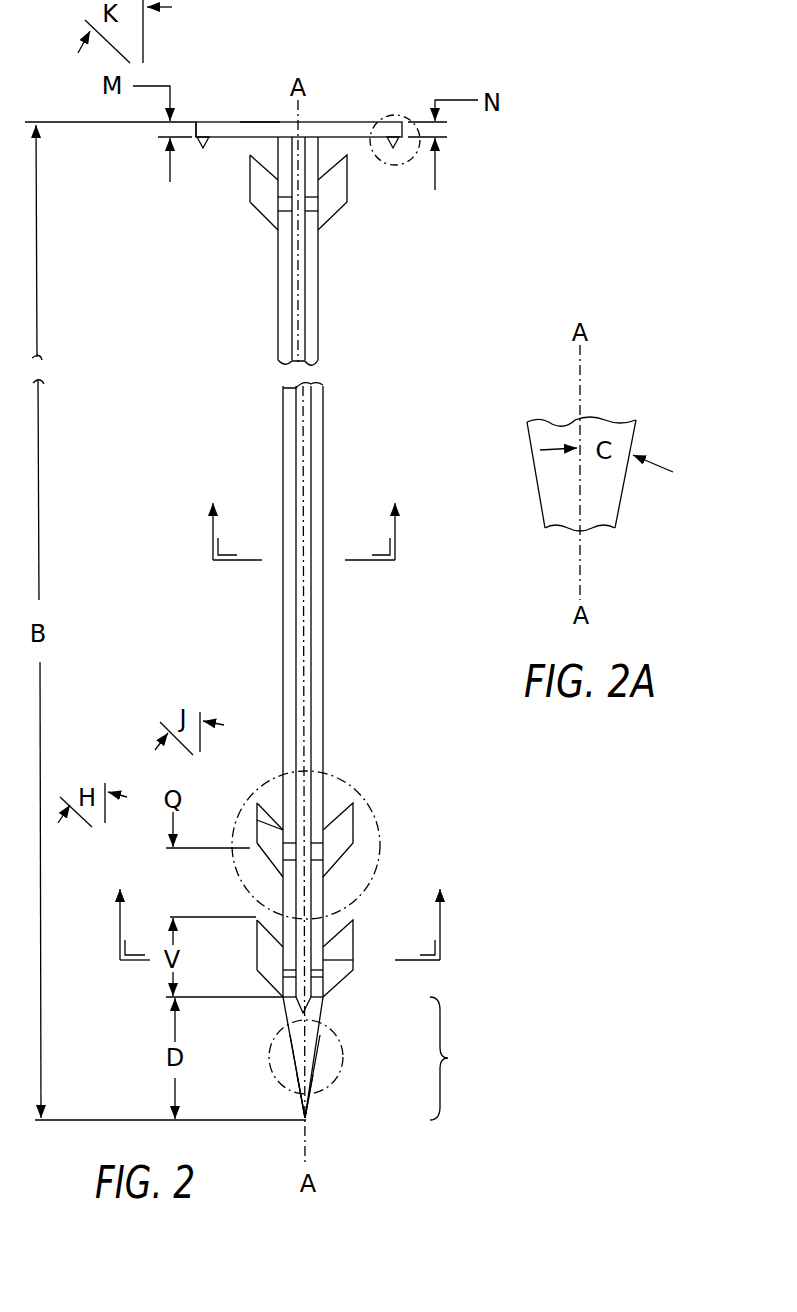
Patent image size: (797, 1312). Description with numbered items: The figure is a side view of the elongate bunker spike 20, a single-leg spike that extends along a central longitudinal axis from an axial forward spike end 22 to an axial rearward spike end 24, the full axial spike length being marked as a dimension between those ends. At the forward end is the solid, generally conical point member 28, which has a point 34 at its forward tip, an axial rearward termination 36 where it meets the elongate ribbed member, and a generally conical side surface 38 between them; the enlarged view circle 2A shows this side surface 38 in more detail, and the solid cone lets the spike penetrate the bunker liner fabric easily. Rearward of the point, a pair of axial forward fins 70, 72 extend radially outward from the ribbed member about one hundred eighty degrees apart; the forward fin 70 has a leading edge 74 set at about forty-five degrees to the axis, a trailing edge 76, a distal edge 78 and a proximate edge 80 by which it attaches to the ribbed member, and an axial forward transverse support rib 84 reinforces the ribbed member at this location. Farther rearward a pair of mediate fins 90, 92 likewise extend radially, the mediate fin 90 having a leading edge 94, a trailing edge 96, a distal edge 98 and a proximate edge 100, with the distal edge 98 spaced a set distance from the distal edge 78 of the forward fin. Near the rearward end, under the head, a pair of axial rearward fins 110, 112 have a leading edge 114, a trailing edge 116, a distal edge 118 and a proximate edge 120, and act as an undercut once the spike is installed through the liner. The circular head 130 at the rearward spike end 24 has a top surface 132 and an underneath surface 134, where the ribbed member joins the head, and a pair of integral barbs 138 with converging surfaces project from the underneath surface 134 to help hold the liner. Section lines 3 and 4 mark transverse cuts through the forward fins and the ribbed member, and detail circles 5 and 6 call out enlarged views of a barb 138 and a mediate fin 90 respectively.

In FIG. 2, the elongate bunker spike 20 is at (244, 670).
In FIG. 2, the axial forward spike end 22 is at (318, 1124).
In FIG. 2, the axial rearward spike end 24 is at (322, 117).
In FIG. 2, the conical point member 28 is at (455, 1058).
In FIG. 2, the point 34 is at (304, 1121).
In FIG. 2, the axial rearward termination 36 is at (320, 988).
In FIG. 2A, the conical side surface 38 is at (540, 497).
In FIG. 2, the axial forward fin 70 is at (256, 921).
In FIG. 2, the axial forward fin 72 is at (348, 932).
In FIG. 2, the leading edge 74 is at (263, 977).
In FIG. 2, the trailing edge 76 is at (267, 922).
In FIG. 2, the distal edge 78 is at (256, 946).
In FIG. 2, the proximate edge 80 is at (287, 958).
In FIG. 2, the axial forward transverse support rib 84 is at (335, 965).
In FIG. 2, the mediate fin 90 is at (260, 792).
In FIG. 2, the mediate fin 92 is at (324, 828).
In FIG. 2, the leading edge 94 is at (257, 861).
In FIG. 2, the trailing edge 96 is at (277, 826).
In FIG. 2, the distal edge 98 is at (256, 820).
In FIG. 2, the proximate edge 100 is at (282, 830).
In FIG. 2, the axial rearward fin 110 is at (250, 204).
In FIG. 2, the axial rearward fin 112 is at (348, 204).
In FIG. 2, the leading edge 114 is at (276, 212).
In FIG. 2, the trailing edge 116 is at (266, 166).
In FIG. 2, the distal edge 118 is at (249, 173).
In FIG. 2, the proximate edge 120 is at (276, 200).
In FIG. 2, the head 130 is at (265, 121).
In FIG. 2, the top surface 132 is at (217, 121).
In FIG. 2, the underneath surface 134 is at (358, 140).
In FIG. 2, the integral barbs 138 is at (198, 142).
In FIG. 2, the section line 3- 3 is at (280, 907).
In FIG. 2, the section line 4- 4 is at (303, 515).
In FIG. 2, the detail circle 5 is at (409, 104).
In FIG. 2, the detail circle 6 is at (380, 820).
In FIG. 2, the detail circle 2A is at (345, 1073).